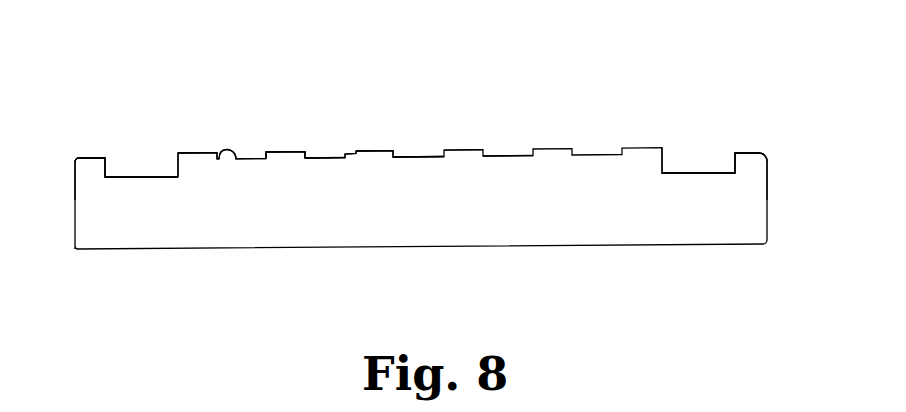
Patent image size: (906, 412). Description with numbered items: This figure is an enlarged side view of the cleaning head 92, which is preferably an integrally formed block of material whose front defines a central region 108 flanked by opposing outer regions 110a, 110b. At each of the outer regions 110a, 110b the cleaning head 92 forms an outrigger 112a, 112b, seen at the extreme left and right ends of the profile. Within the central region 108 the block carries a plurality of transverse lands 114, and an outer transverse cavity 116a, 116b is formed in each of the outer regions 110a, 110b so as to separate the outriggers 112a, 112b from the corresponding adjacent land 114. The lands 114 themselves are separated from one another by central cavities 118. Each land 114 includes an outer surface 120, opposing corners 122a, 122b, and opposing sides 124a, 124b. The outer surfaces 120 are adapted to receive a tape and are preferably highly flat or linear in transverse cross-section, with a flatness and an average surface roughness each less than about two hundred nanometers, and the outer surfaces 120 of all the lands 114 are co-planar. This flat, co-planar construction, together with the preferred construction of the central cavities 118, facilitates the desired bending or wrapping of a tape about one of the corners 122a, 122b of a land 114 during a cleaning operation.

The cleaning head 92 is at (355, 32).
The central region 108 is at (313, 118).
The outer region 110a is at (126, 140).
The outer region 110b is at (697, 128).
The outrigger 112a is at (90, 190).
The outrigger 112b is at (763, 146).
The transverse lands 114 is at (458, 137).
The outer transverse cavity 116a is at (157, 190).
The outer transverse cavity 116b is at (704, 190).
The central cavities 118 is at (488, 175).
The outer surface 120 is at (283, 152).
The corner 122a is at (180, 152).
The corner 122b is at (235, 157).
The side 124a is at (347, 155).
The side 124b is at (395, 155).